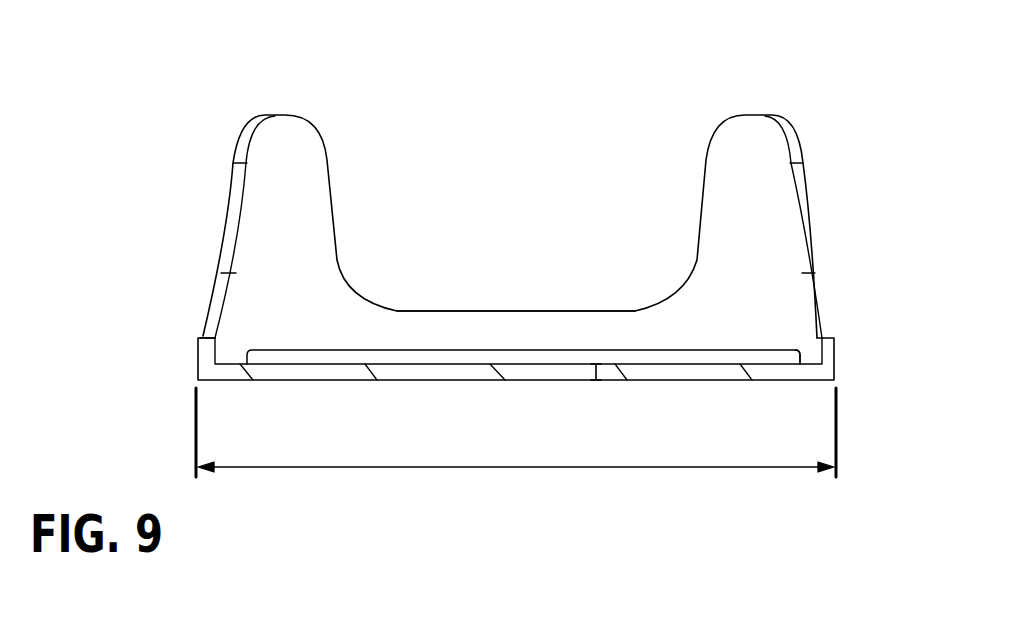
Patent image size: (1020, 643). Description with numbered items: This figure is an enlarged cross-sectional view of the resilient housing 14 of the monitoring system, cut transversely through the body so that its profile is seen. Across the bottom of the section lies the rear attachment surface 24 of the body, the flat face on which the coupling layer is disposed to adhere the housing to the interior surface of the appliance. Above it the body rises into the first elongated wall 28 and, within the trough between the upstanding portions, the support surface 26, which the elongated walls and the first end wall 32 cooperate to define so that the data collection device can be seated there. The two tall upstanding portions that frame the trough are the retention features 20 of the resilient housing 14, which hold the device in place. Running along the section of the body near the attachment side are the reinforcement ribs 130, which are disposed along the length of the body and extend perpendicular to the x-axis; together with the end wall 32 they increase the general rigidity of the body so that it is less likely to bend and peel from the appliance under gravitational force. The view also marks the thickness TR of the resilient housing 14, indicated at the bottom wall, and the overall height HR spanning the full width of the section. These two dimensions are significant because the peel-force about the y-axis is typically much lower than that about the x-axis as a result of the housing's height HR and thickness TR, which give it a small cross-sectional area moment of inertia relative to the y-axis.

The resilient housing 14 is at (198, 366).
The retention features 20 is at (283, 148).
The rear attachment surface 24 is at (425, 382).
The support surface 26 is at (484, 364).
The first elongated wall 28 is at (202, 337).
The first end wall 32 is at (568, 326).
The reinforcement ribs 130 is at (745, 352).
The thickness of the resilient housing TR is at (597, 372).
The overall height of the resilient housing HR is at (487, 467).